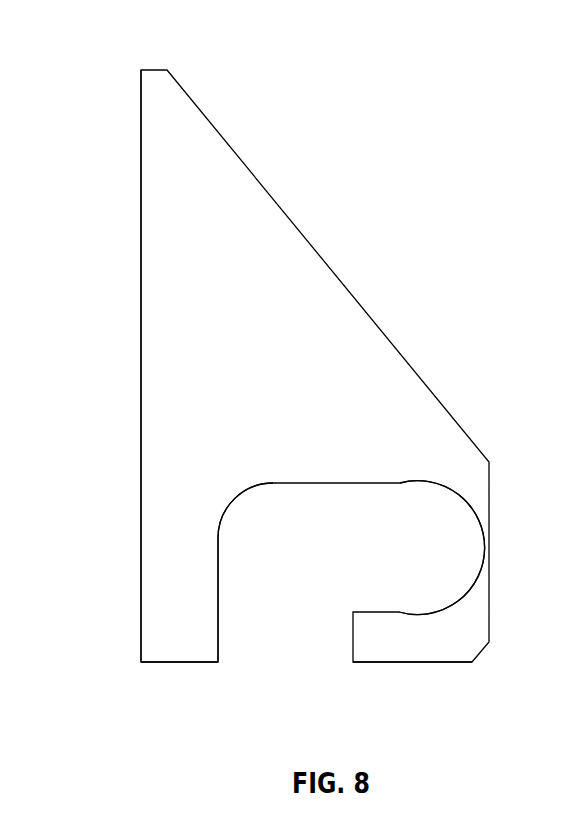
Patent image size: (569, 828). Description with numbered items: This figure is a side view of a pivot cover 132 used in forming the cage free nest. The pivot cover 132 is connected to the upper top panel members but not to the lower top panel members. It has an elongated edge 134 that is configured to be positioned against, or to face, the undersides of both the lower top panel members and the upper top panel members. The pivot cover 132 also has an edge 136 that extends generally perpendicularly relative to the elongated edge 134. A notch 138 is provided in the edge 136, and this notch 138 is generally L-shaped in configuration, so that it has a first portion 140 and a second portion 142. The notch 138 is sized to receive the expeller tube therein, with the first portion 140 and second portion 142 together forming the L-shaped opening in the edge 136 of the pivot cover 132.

The pivot cover 132 is at (360, 145).
The elongated edge 134 is at (141, 333).
The edge 136 is at (188, 662).
The notch 138 is at (285, 517).
The first portion 140 is at (308, 573).
The second portion 142 is at (415, 537).